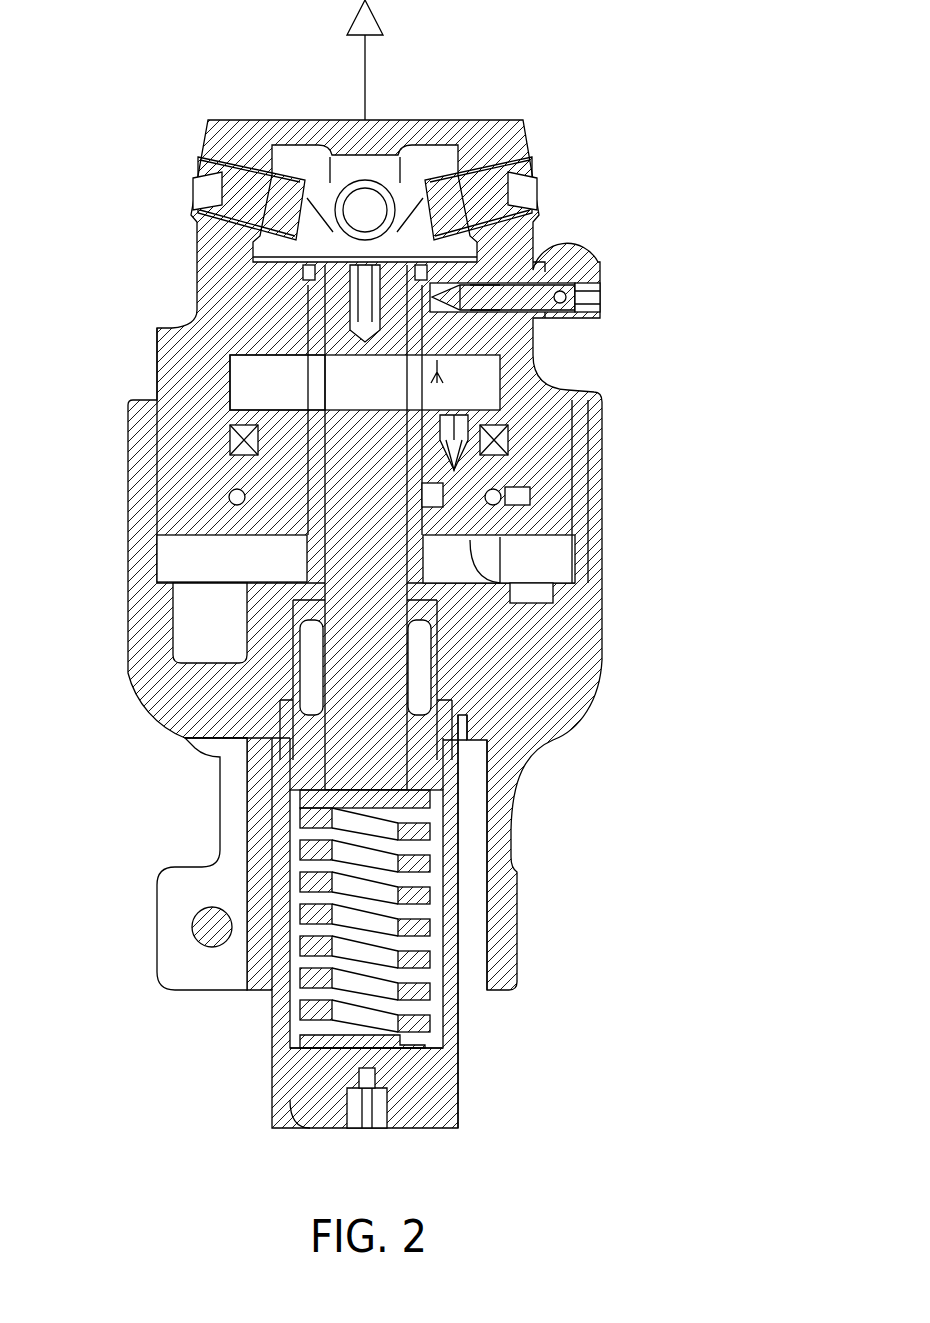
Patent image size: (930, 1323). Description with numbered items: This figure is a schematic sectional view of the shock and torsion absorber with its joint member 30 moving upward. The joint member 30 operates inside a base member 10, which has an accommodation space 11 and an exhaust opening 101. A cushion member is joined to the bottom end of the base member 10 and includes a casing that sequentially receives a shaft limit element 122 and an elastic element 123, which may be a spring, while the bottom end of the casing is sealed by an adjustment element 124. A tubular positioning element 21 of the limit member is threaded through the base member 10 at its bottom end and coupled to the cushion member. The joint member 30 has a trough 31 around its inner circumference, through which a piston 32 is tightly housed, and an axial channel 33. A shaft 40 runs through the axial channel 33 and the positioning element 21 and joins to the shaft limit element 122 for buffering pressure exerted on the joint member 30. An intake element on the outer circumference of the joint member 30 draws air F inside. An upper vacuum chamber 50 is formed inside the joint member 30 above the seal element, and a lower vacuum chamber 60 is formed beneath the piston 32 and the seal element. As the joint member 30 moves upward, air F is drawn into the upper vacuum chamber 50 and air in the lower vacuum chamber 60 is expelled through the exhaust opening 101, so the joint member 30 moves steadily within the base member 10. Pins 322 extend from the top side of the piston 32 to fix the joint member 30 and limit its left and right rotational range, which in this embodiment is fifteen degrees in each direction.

The base member 10 is at (605, 565).
The accommodation space 11 is at (568, 422).
The positioning element 21 is at (430, 597).
The joint member 30 is at (153, 330).
The trough 31 is at (205, 527).
The piston 32 is at (493, 483).
The pins 322 is at (523, 497).
The axial channel 33 is at (435, 295).
The shaft 40 is at (320, 293).
The upper vacuum chamber 50 is at (258, 381).
The lower vacuum chamber 60 is at (237, 473).
The exhaust opening 101 is at (340, 555).
The shaft limit element 122 is at (440, 746).
The elastic element 123 is at (305, 822).
The adjustment element 124 is at (292, 1087).
The air F is at (560, 252).